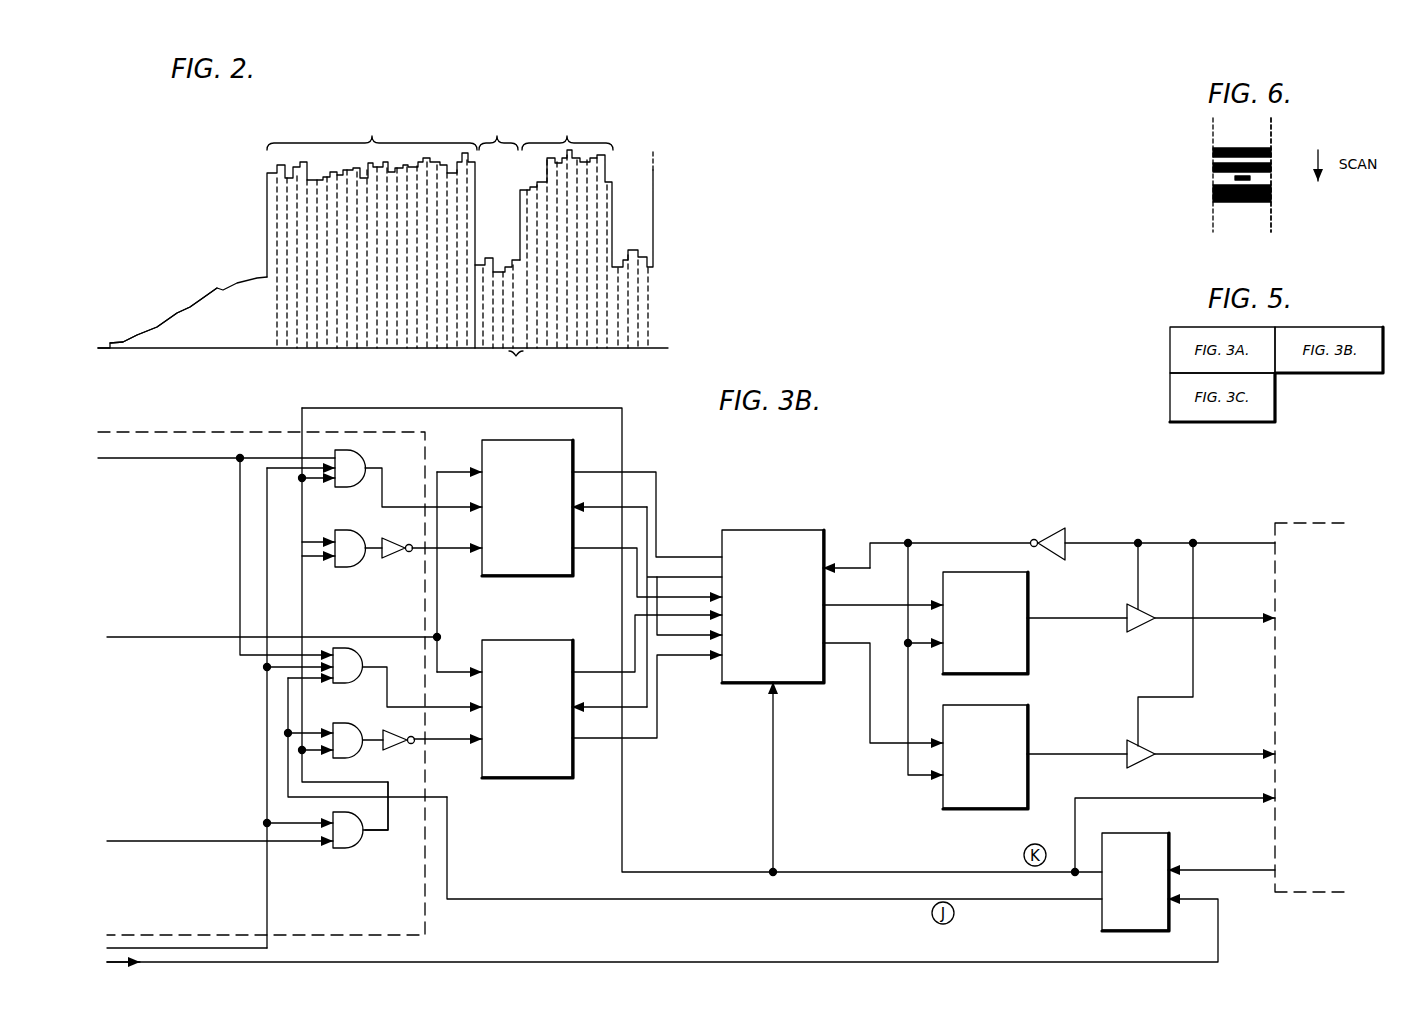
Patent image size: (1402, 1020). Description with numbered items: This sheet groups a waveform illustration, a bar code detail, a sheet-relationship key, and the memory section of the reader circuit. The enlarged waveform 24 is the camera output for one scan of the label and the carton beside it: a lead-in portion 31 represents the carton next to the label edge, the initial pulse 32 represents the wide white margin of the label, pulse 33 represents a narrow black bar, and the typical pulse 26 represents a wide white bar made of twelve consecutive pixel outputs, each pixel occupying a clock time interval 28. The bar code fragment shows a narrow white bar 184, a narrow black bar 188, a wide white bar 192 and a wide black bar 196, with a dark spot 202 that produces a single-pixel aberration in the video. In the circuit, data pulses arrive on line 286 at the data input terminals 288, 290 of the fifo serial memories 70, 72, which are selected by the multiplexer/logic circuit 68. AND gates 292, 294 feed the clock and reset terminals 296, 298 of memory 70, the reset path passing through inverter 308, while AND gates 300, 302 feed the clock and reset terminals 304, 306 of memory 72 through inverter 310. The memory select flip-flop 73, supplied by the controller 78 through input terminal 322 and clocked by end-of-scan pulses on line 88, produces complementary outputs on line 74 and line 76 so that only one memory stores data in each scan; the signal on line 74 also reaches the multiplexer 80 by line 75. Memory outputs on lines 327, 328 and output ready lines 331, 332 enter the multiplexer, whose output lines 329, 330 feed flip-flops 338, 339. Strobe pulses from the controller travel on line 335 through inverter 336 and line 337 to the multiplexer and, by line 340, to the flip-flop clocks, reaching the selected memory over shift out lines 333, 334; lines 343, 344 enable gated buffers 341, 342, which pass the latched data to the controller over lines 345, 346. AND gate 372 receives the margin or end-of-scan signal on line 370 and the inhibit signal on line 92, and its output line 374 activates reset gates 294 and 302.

In FIG. 2, the waveform 24 is at (235, 205).
In FIG. 2, the pulse 26 is at (586, 229).
In FIG. 2, the clock time interval 28 is at (517, 365).
In FIG. 2, the lead-in portion 31 is at (197, 302).
In FIG. 2, the initial pulse 32 is at (372, 229).
In FIG. 2, the pulse 33 is at (497, 229).
In FIG. 3B, the multiplexer/logic circuit 68 is at (203, 430).
In FIG. 3B, the serial memory 70 is at (578, 446).
In FIG. 3B, the serial memory 72 is at (577, 768).
In FIG. 3B, the memory select flip-flop circuit 73 is at (1102, 926).
In FIG. 3B, the line 74 is at (530, 408).
In FIG. 3B, the line 75 is at (778, 774).
In FIG. 3B, the line 76 is at (448, 850).
In FIG. 3B, the controller 78 is at (1322, 535).
In FIG. 3B, the multiplexer 80 is at (810, 528).
In FIG. 3B, the line 88 is at (598, 960).
In FIG. 3B, the line 92 is at (270, 944).
In FIG. 6, the narrow white bar 184 is at (1210, 157).
In FIG. 6, the narrow black bar 188 is at (1210, 168).
In FIG. 6, the wide white bar 192 is at (1270, 178).
In FIG. 6, the wide black bar 196 is at (1270, 195).
In FIG. 6, the dark spot 202 is at (1232, 177).
In FIG. 3B, the line 286 is at (183, 637).
In FIG. 3B, the data input terminal 288 is at (455, 470).
In FIG. 3B, the data input terminal 290 is at (456, 668).
In FIG. 3B, the AND gate 292 is at (357, 450).
In FIG. 3B, the AND gate 294 is at (360, 570).
In FIG. 3B, the clock terminal 296 is at (440, 505).
In FIG. 3B, the reset terminal 298 is at (456, 560).
In FIG. 3B, the AND gate 300 is at (358, 652).
In FIG. 3B, the AND gate 302 is at (353, 726).
In FIG. 3B, the clock terminal 304 is at (452, 707).
In FIG. 3B, the reset terminal 306 is at (437, 745).
In FIG. 3B, the inverter 308 is at (376, 538).
In FIG. 3B, the inverter 310 is at (380, 750).
In FIG. 3B, the input terminal 322 is at (1247, 870).
In FIG. 3B, the line 327 is at (657, 478).
In FIG. 3B, the line 328 is at (657, 720).
In FIG. 3B, the output line 329 is at (862, 603).
In FIG. 3B, the output line 330 is at (858, 640).
In FIG. 3B, the output ready line 331 is at (607, 552).
In FIG. 3B, the output ready line 332 is at (603, 668).
In FIG. 3B, the shift out input line 333 is at (647, 517).
In FIG. 3B, the shift out input line 334 is at (648, 688).
In FIG. 3B, the line 335 is at (1221, 543).
In FIG. 3B, the inverter 336 is at (1052, 524).
In FIG. 3B, the line 337 is at (945, 540).
In FIG. 3B, the flip-flop 338 is at (1030, 672).
In FIG. 3B, the flip-flop 339 is at (1030, 718).
In FIG. 3B, the line 340 is at (912, 577).
In FIG. 3B, the gated buffer 341 is at (1127, 608).
In FIG. 3B, the gated buffer 342 is at (1127, 763).
In FIG. 3B, the line 343 is at (1138, 567).
In FIG. 3B, the line 344 is at (1195, 581).
In FIG. 3B, the line 345 is at (1227, 620).
In FIG. 3B, the line 346 is at (1212, 754).
In FIG. 3B, the line 370 is at (196, 840).
In FIG. 3B, the AND gate 372 is at (360, 848).
In FIG. 3B, the output line 374 is at (390, 805).